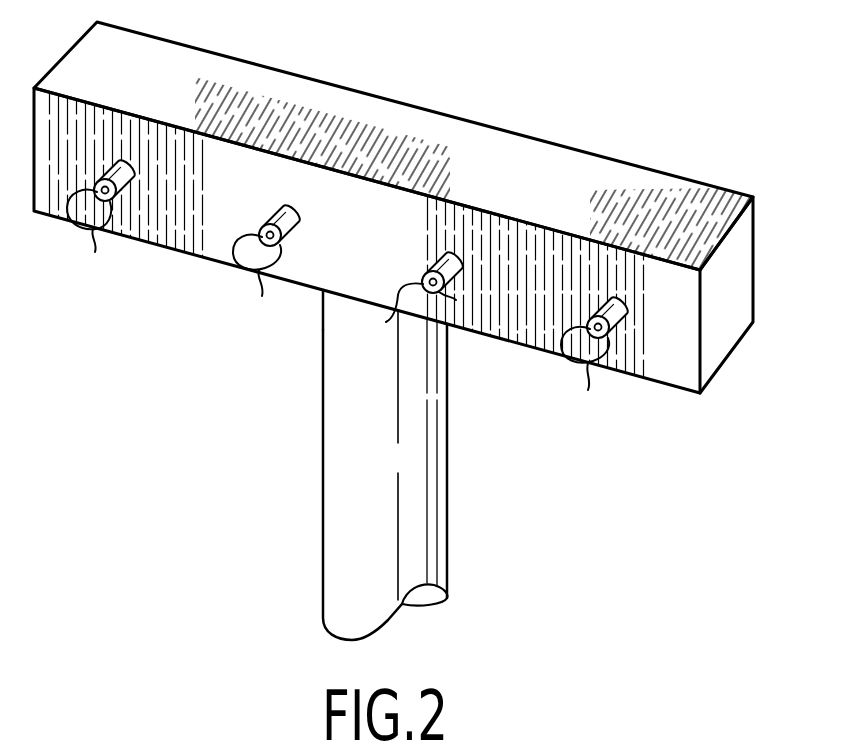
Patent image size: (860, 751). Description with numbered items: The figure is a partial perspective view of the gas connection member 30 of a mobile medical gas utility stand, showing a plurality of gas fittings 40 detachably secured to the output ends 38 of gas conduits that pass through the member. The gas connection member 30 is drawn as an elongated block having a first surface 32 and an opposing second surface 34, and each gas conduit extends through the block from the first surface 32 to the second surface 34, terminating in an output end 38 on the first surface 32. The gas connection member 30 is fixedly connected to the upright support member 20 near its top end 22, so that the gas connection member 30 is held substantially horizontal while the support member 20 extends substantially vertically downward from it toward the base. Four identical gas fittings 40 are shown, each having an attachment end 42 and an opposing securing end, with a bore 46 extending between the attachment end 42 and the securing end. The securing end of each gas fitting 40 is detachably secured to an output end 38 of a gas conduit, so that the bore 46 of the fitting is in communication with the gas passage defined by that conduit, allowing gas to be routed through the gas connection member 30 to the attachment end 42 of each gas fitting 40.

The support member 20 is at (447, 545).
The top end 22 is at (317, 296).
The gas connection member 30 is at (727, 288).
The first surface 32 is at (682, 368).
The second surface 34 is at (758, 232).
The output end 38 is at (122, 163).
The gas fitting 40 is at (69, 219).
The attachment end 42 is at (130, 163).
The bore 46 is at (345, 328).